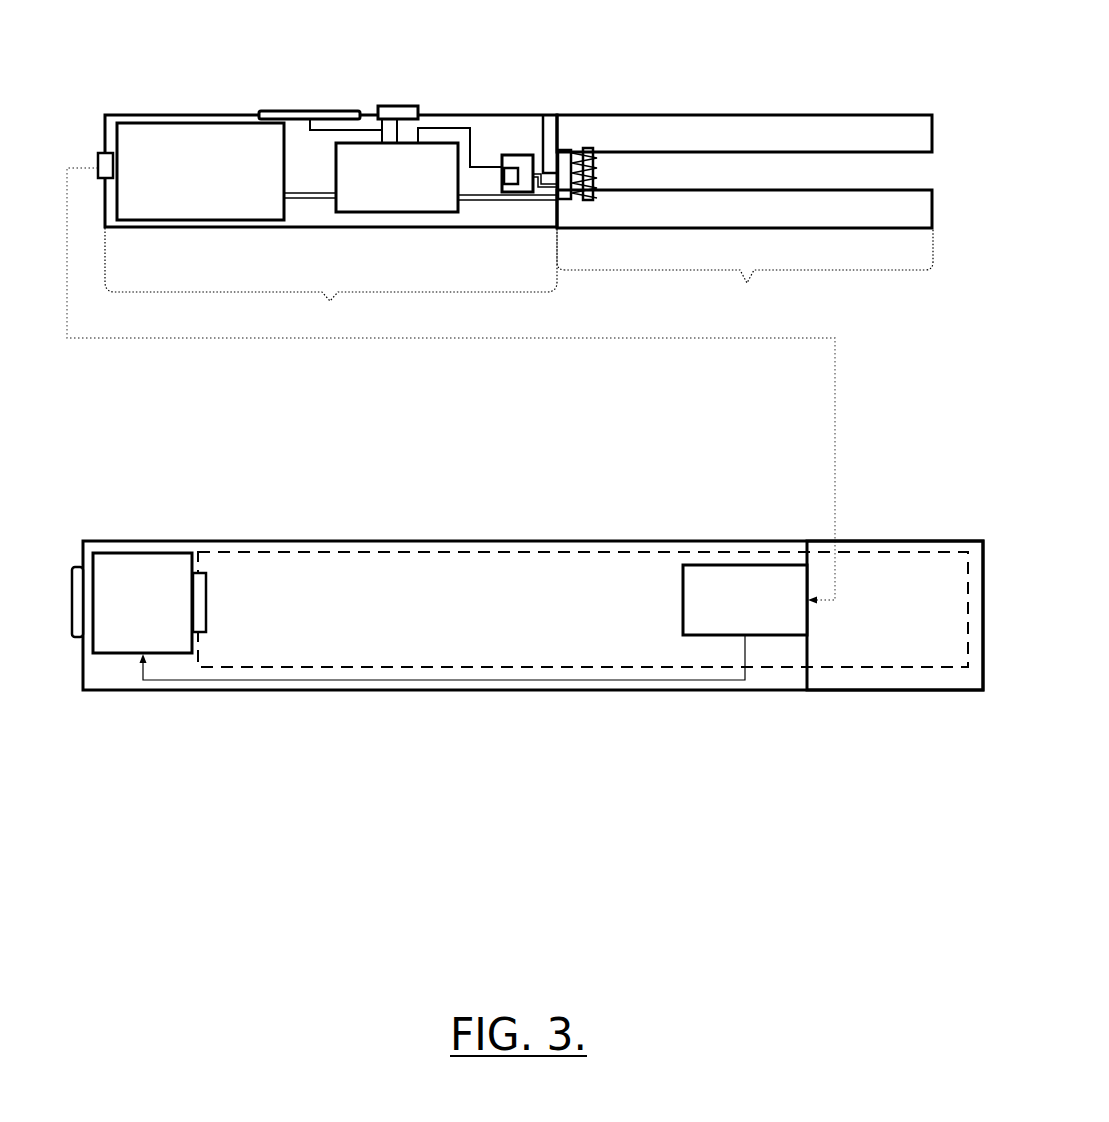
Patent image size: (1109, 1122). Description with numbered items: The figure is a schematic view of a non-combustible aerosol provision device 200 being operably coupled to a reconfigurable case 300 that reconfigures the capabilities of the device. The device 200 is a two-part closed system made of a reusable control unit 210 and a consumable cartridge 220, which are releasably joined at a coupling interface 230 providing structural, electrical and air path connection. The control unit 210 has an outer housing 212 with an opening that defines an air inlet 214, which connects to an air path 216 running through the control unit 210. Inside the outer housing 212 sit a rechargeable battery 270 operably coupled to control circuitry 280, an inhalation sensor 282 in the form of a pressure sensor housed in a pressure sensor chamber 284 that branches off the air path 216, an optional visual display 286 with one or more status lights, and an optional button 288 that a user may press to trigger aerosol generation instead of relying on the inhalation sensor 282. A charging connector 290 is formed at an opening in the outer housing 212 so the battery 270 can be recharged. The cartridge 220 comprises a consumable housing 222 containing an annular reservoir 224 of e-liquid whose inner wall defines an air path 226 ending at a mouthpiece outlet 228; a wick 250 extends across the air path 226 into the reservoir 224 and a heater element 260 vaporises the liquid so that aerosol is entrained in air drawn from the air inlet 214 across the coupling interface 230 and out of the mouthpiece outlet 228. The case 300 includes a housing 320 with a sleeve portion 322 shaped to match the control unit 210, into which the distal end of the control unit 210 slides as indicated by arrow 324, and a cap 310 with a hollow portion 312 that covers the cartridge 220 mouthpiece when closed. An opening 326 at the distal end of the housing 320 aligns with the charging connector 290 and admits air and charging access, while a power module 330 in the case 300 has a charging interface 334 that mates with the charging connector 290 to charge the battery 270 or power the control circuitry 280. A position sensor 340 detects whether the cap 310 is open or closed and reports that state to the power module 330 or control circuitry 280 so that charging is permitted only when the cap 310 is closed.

The non-combustible aerosol provision device 200 is at (541, 172).
The control unit 210 is at (387, 172).
The outer housing 212 is at (331, 188).
The air inlet 214 is at (499, 100).
The air path 216 is at (595, 92).
The cartridge 220 is at (771, 193).
The consumable housing 222 is at (744, 147).
The reservoir 224 is at (896, 145).
The air path 226 is at (793, 186).
The mouthpiece outlet 228 is at (946, 171).
The coupling interface 230 is at (604, 207).
The wick 250 is at (620, 141).
The heater element 260 is at (630, 175).
The battery 270 is at (200, 143).
The control circuitry 280 is at (419, 197).
The inhalation sensor 282 is at (471, 132).
The pressure sensor chamber 284 is at (528, 218).
The visual display 286 is at (311, 98).
The button 288 is at (416, 97).
The charging connector 290 is at (144, 95).
The reconfigurable case 300 is at (527, 595).
The cap 310 is at (895, 582).
The hollow portion 312 is at (589, 649).
The housing 320 is at (527, 613).
The sleeve portion 322 is at (421, 684).
The arrow 324 is at (498, 386).
The opening 326 is at (104, 648).
The power module 330 is at (142, 569).
The charging interface 334 is at (241, 571).
The position sensor 340 is at (769, 648).